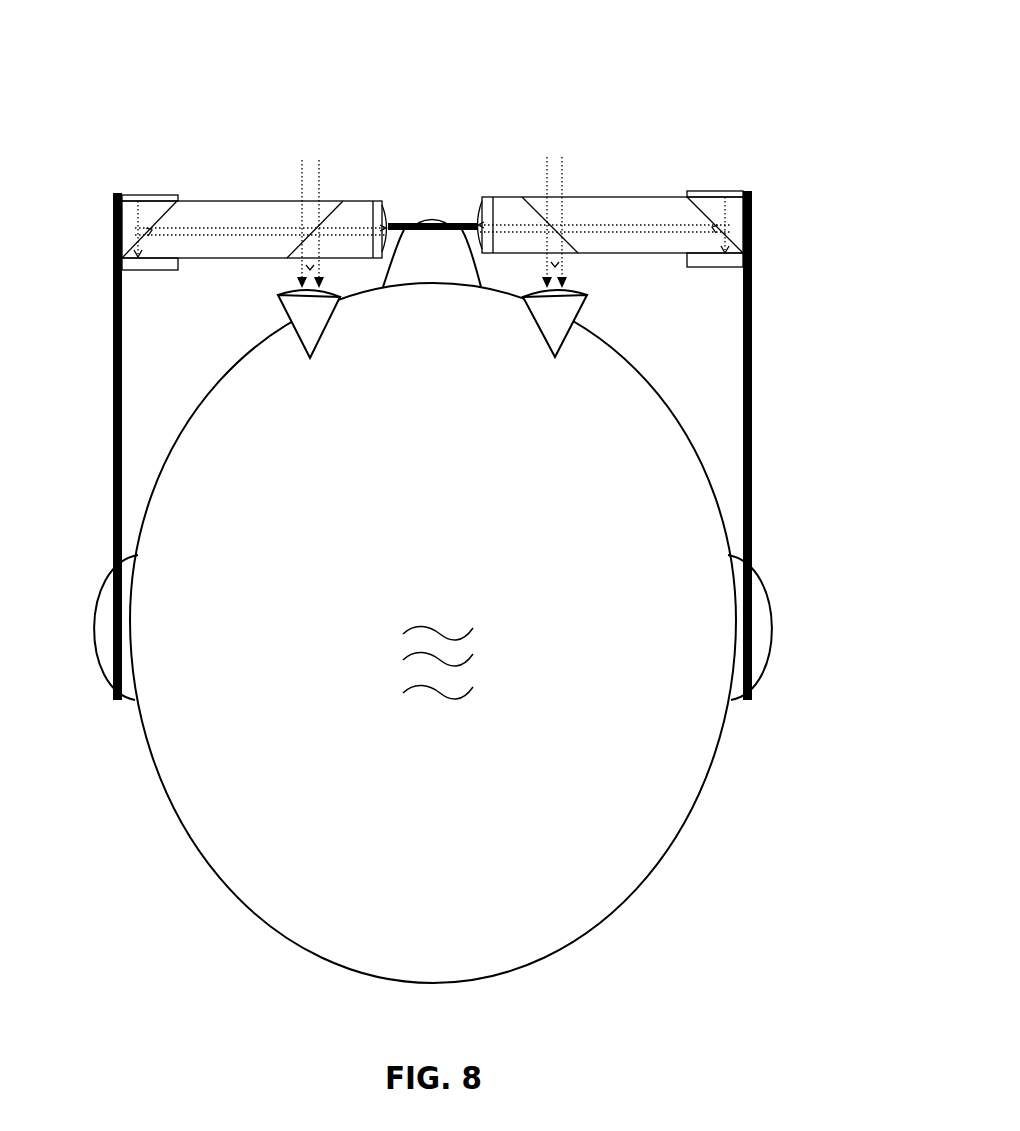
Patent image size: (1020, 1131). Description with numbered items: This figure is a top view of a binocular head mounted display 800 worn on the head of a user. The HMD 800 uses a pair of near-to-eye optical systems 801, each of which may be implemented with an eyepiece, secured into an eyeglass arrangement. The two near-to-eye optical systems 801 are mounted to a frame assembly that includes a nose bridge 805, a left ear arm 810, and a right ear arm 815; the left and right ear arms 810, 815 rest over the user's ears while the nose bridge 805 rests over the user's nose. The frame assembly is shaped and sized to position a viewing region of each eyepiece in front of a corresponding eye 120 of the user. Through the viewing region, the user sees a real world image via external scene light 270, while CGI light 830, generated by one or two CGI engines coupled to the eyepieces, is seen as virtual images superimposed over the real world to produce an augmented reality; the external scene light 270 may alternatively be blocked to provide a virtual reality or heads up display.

The head mounted display 800 is at (690, 62).
The near-to-eye optical system 801 is at (160, 165).
The external scene light 270 is at (302, 160).
The nose bridge 805 is at (470, 222).
The CGI light 830 is at (300, 256).
The eye 120 is at (317, 345).
The left ear arm 810 is at (113, 445).
The right ear arm 815 is at (752, 445).